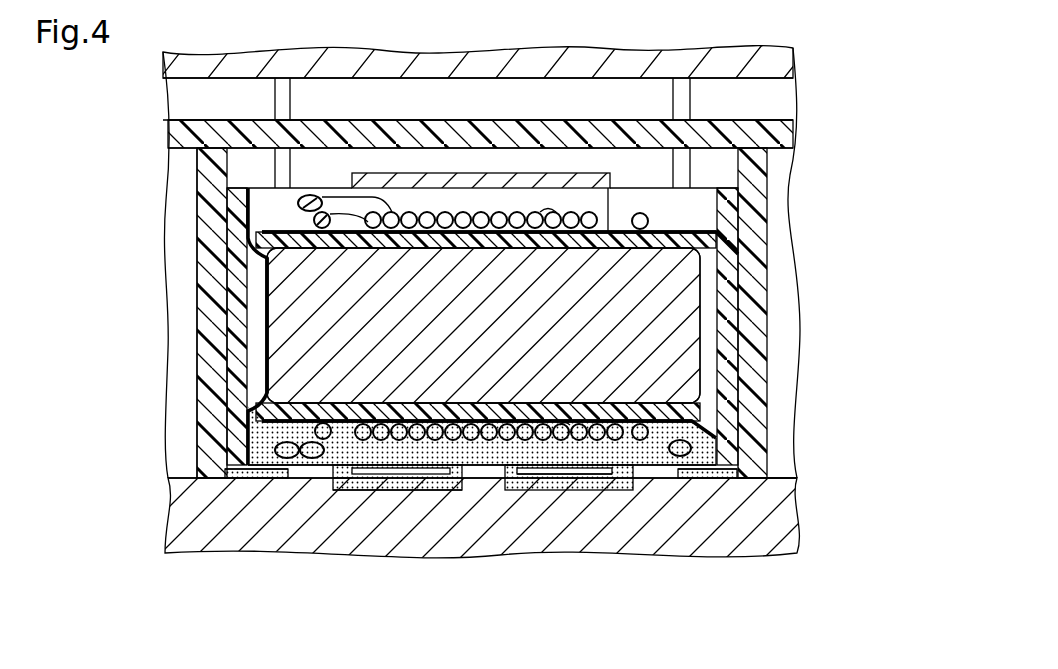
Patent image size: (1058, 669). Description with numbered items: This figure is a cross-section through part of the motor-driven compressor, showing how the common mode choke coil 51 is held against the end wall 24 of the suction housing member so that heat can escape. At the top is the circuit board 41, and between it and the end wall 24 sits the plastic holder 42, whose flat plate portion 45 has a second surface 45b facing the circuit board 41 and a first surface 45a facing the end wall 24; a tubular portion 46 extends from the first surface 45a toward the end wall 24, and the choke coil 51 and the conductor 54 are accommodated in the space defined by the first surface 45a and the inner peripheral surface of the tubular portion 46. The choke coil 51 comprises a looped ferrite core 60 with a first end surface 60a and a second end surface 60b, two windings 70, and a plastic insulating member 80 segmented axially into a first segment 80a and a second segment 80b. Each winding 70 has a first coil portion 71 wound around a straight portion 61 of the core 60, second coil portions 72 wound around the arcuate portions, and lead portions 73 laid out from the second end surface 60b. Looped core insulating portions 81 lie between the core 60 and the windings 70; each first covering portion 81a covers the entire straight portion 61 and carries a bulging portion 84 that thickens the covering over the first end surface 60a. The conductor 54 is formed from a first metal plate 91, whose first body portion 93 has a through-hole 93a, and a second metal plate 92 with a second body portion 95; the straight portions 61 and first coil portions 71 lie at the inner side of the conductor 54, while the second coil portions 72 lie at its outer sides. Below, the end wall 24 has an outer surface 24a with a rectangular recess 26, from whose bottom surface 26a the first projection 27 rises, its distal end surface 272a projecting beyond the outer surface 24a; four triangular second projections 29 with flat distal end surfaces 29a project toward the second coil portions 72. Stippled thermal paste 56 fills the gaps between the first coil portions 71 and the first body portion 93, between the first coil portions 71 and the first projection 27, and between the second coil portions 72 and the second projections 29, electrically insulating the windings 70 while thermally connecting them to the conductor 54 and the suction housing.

The circuit board 41 is at (483, 65).
The holder 42 is at (170, 116).
The plate portion 45 is at (170, 136).
The first surface 45a is at (717, 150).
The second surface 45b is at (793, 111).
The tubular portion 46 is at (190, 208).
The common mode choke coil 51 is at (260, 186).
The conductor 54 is at (380, 172).
The thermal paste 56 is at (340, 490).
The core 60 is at (197, 268).
The first end surface 60a is at (468, 418).
The second end surface 60b is at (515, 235).
The straight portion 61 is at (267, 357).
The winding 70 is at (548, 212).
The first coil portion 71 is at (558, 344).
The second coil portion 72 is at (323, 422).
The lead portion 73 is at (291, 96).
The insulating member 80 is at (557, 313).
The first segment 80a is at (738, 362).
The second segment 80b is at (737, 277).
The core insulating portion 81 is at (491, 325).
The first covering portion 81a is at (483, 325).
The bulging portion 84 is at (550, 403).
The first metal plate 91 is at (372, 474).
The second metal plate 92 is at (470, 213).
The first body portion 93 is at (598, 490).
The through-hole 93a is at (548, 474).
The second body portion 95 is at (520, 214).
The end wall 24 is at (176, 517).
The outer surface 24a is at (797, 478).
The recess 26 is at (620, 490).
The bottom surface 26a is at (420, 490).
The first projection 27 is at (455, 465).
The distal end surface 272a is at (510, 466).
The second projection 29 is at (275, 478).
The distal end surface 29a is at (268, 479).